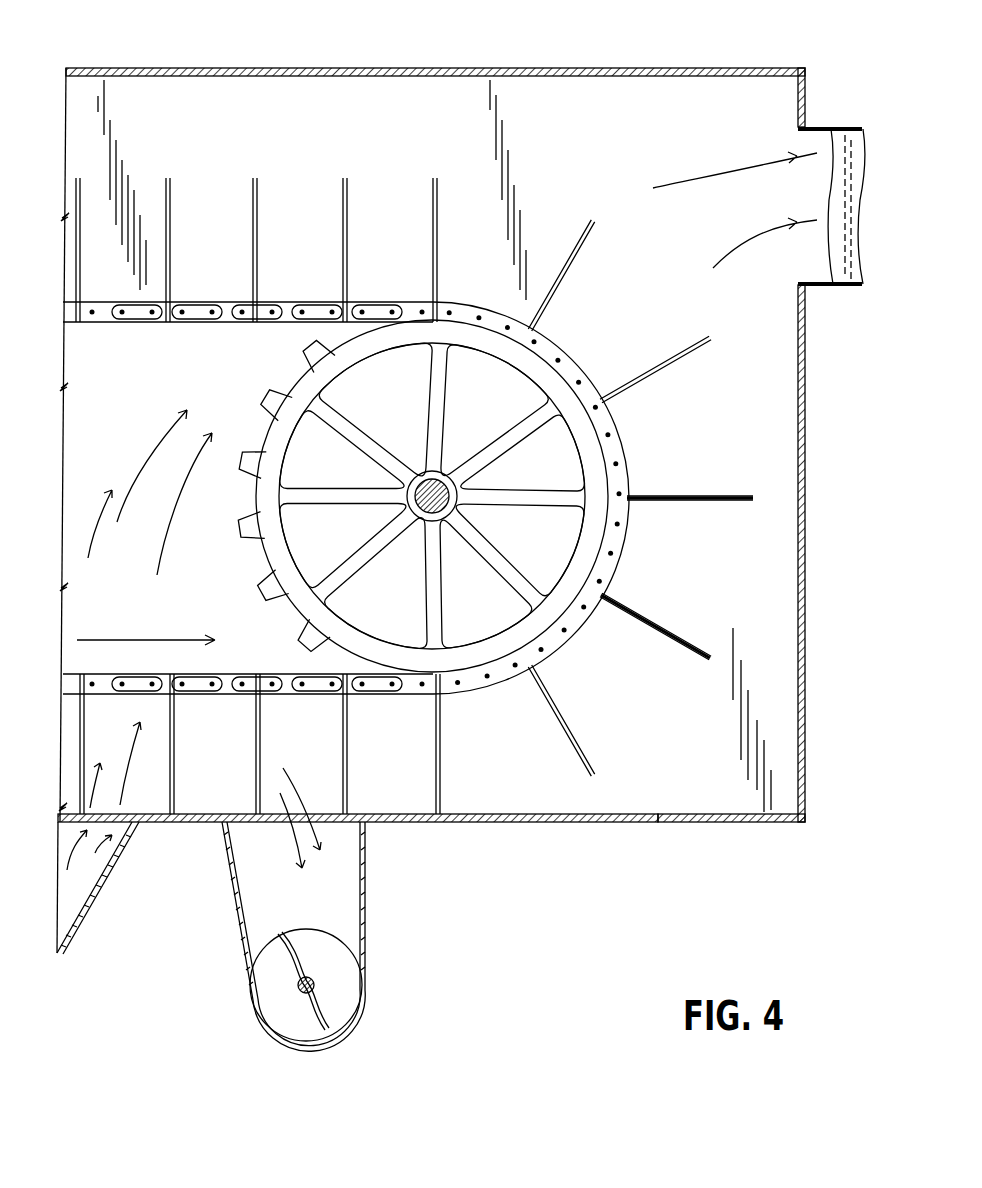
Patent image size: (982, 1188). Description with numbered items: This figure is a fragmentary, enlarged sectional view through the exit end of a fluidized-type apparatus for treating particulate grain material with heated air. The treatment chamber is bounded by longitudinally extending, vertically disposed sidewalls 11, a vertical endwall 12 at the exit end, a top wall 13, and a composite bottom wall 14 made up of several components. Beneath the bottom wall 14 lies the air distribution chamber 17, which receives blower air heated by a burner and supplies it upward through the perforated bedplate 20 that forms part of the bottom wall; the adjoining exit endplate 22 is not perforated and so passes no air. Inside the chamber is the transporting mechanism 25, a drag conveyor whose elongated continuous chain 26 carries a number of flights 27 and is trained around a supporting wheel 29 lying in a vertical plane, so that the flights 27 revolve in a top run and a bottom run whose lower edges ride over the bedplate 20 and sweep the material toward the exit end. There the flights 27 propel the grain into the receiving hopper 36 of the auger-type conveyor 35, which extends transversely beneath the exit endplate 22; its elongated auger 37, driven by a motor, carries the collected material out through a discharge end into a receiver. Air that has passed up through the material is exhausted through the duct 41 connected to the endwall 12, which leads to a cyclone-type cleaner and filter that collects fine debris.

The sidewalls 11 is at (155, 102).
The endwalls 12 is at (806, 555).
The top wall 13 is at (292, 69).
The composite bottom wall 14 is at (723, 835).
The air distribution chamber 17 is at (88, 938).
The bedplate 20 is at (104, 829).
The exit endplate 22 is at (580, 828).
The transporting mechanism 25 is at (593, 755).
The chain 26 is at (118, 323).
The flights 27 is at (345, 178).
The supporting wheel 29 is at (272, 370).
The auger-type conveyor 35 is at (252, 1010).
The receiving hopper 36 is at (366, 879).
The auger 37 is at (340, 967).
The duct 41 is at (830, 127).